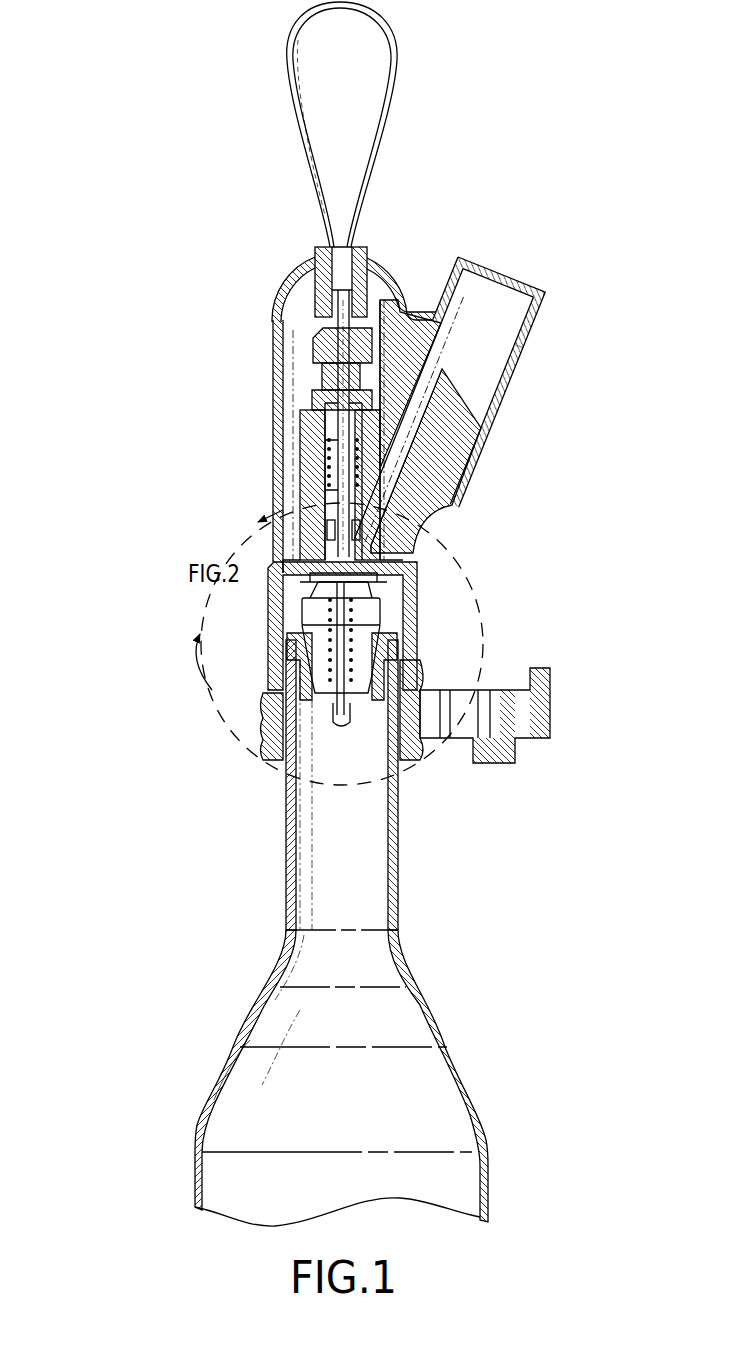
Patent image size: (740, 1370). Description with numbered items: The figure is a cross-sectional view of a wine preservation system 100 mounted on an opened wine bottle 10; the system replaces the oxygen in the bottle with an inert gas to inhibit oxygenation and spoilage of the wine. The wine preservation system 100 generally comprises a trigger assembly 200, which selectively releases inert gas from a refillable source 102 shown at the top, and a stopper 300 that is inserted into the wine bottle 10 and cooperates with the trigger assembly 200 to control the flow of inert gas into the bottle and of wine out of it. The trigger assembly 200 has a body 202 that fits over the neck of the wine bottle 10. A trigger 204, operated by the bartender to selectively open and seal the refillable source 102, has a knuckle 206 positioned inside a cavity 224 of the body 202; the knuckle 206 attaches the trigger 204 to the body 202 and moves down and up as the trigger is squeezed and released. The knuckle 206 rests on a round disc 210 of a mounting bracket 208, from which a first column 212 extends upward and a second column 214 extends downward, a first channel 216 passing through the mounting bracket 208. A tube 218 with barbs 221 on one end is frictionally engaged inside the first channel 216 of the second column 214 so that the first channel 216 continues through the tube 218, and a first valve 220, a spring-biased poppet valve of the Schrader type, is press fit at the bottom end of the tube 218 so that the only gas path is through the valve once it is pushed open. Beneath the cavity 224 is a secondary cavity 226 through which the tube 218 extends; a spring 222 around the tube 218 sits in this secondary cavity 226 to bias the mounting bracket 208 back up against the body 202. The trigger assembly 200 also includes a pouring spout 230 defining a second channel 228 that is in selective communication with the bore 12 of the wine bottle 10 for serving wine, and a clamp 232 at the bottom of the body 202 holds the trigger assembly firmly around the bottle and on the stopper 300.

The wine bottle 10 is at (205, 1087).
The bore 12 is at (312, 718).
The wine preservation system 100 is at (148, 248).
The refillable source 102 is at (383, 100).
The trigger assembly 200 is at (327, 424).
The body 202 is at (300, 494).
The trigger 204 is at (396, 258).
The knuckle 206 is at (313, 345).
The mounting bracket 208 is at (318, 376).
The round disc 210 is at (312, 392).
The first column 212 is at (322, 345).
The second column 214 is at (330, 410).
The first channel 216 is at (338, 322).
The tube 218 is at (335, 533).
The first valve 220 is at (338, 533).
The barbs 221 is at (312, 448).
The spring 222 is at (370, 470).
The cavity 224 is at (380, 410).
The secondary cavity 226 is at (375, 445).
The second channel 228 is at (502, 318).
The pouring spout 230 is at (523, 355).
The clamp 232 is at (547, 702).
The stopper 300 is at (387, 603).